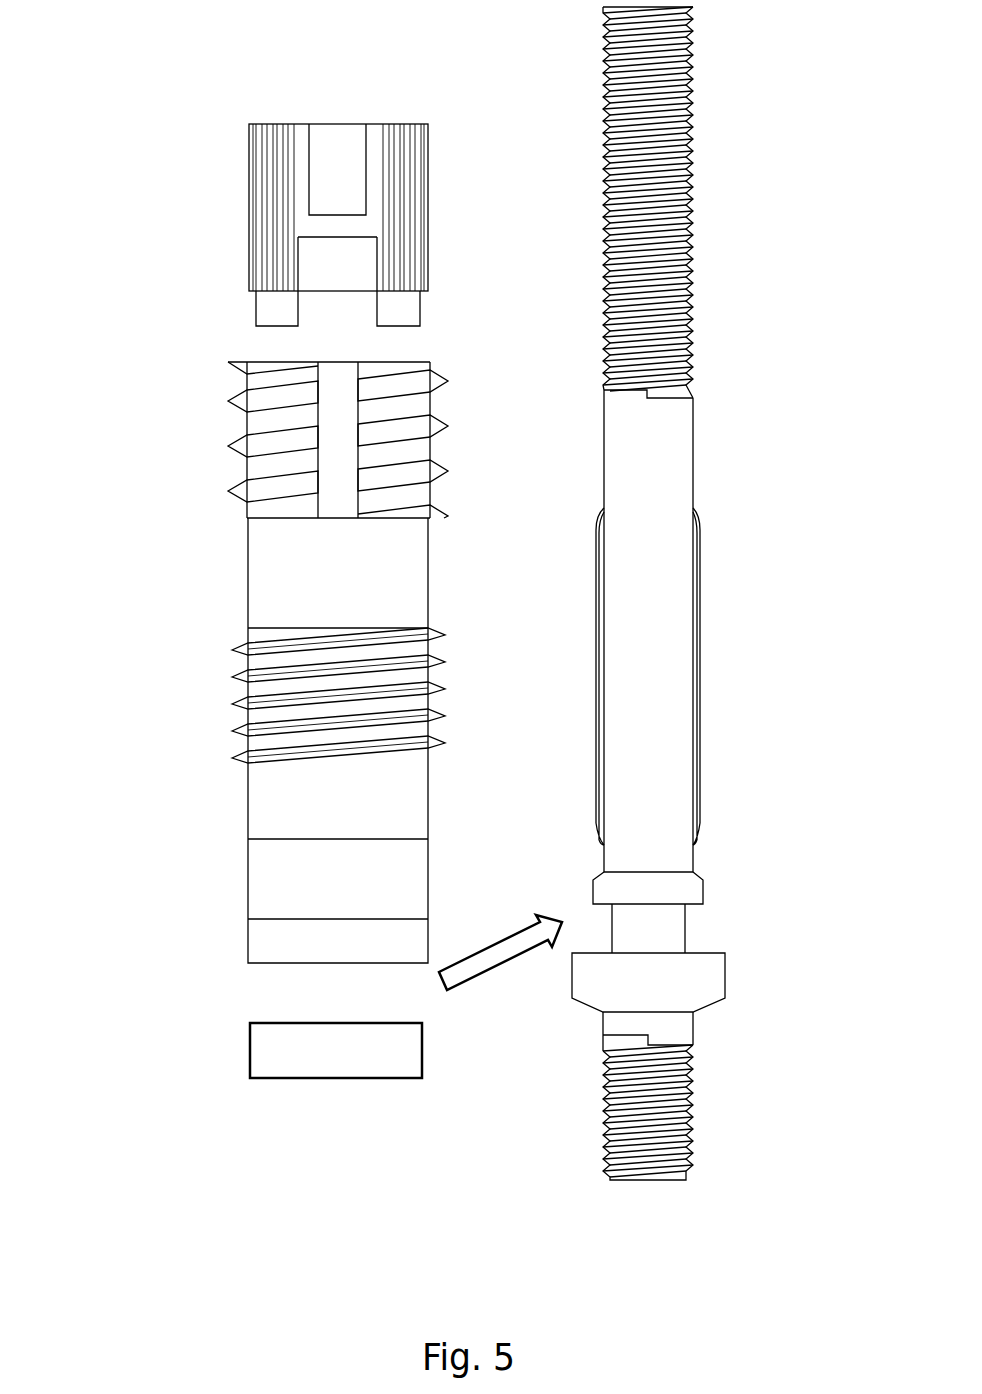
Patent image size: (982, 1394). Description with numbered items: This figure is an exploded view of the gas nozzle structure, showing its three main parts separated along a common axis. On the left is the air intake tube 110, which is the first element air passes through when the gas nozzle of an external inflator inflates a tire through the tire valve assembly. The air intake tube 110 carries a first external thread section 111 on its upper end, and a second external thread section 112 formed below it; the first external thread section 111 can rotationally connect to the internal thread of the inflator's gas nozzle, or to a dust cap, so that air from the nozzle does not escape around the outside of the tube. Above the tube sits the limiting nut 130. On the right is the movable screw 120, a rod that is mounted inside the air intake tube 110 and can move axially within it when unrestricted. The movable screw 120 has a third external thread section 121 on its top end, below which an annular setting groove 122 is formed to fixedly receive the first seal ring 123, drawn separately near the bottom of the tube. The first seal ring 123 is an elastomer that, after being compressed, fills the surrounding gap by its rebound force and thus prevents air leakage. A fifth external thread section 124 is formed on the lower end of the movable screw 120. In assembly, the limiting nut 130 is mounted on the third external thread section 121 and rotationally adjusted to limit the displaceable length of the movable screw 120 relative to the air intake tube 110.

The air intake tube 110 is at (234, 563).
The first external thread section 111 is at (217, 430).
The second external thread section 112 is at (216, 664).
The movable screw 120 is at (713, 426).
The third external thread section 121 is at (702, 172).
The annular setting groove 122 is at (702, 922).
The first seal ring 123 is at (233, 1041).
The fifth external thread section 124 is at (704, 1088).
The limiting nut 130 is at (221, 189).